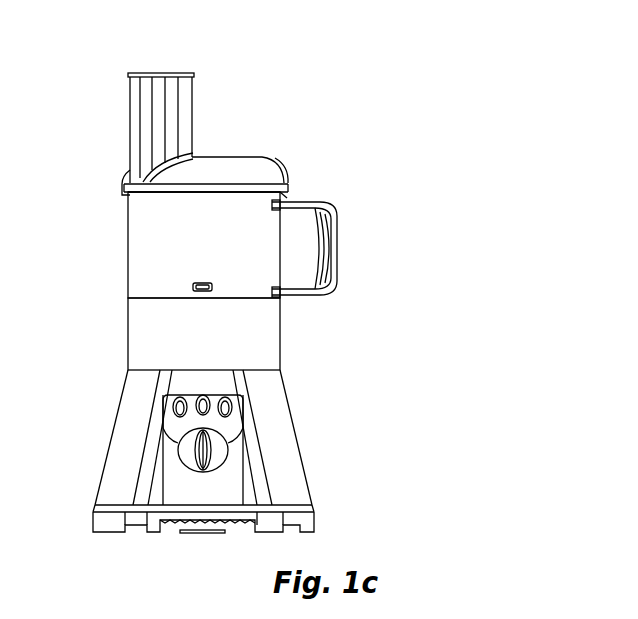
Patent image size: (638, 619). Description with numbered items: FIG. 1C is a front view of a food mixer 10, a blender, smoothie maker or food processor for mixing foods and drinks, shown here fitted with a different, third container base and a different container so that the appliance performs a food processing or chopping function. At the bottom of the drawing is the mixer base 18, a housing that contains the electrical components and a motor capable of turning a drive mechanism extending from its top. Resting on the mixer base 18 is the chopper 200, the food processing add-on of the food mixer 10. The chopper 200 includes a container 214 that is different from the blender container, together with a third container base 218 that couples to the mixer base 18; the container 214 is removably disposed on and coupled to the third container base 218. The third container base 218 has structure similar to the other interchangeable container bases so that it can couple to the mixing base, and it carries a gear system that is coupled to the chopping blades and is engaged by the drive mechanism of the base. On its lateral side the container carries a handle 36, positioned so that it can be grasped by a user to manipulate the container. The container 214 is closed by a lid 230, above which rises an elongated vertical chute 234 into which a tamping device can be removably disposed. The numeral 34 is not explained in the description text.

The food mixer 10 is at (218, 285).
The mixer base 18 is at (157, 442).
The control buttons 34 is at (121, 416).
The handle 36 is at (0, 497).
The chopper 200 is at (210, 204).
The container 214 is at (128, 222).
The third container base 218 is at (128, 327).
The lid 230 is at (238, 158).
The elongated vertical chute 234 is at (192, 102).